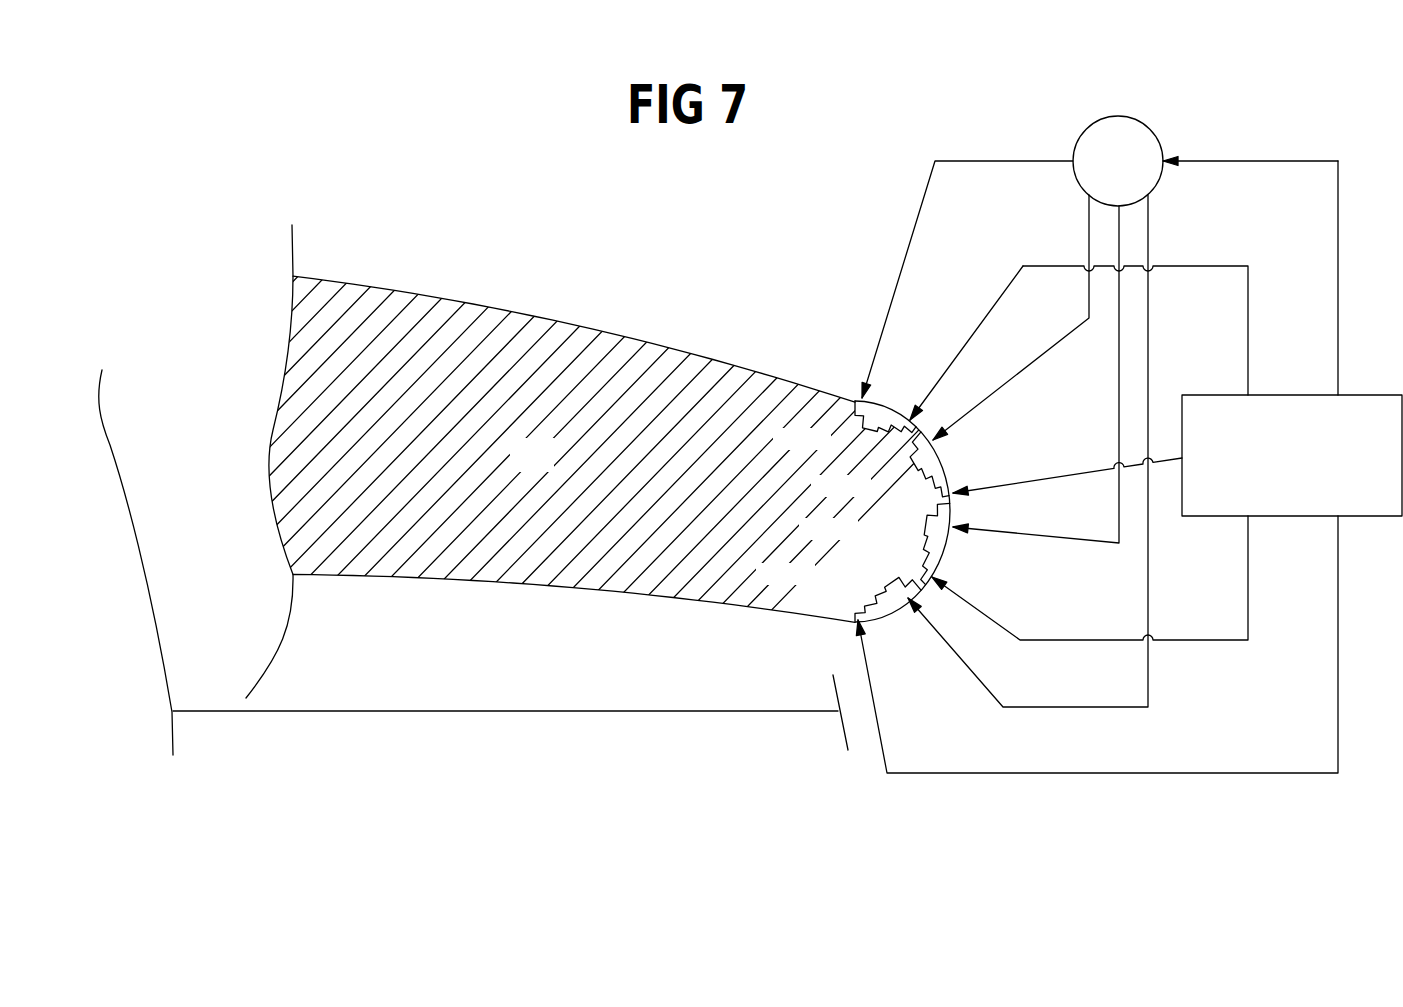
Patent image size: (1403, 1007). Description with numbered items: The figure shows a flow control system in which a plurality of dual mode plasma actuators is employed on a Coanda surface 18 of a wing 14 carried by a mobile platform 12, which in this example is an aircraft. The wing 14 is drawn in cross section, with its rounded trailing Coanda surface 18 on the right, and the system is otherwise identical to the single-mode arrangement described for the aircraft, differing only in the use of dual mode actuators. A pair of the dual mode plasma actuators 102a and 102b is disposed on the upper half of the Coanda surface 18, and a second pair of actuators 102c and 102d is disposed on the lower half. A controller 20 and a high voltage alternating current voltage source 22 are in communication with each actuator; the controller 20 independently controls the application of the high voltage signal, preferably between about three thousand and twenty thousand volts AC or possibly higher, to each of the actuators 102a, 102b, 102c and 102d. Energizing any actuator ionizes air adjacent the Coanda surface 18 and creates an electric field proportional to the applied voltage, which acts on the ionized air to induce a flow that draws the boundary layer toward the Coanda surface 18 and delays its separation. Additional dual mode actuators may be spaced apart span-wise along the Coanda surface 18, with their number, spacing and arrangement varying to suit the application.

The mobile platform 12 is at (588, 712).
The wing 14 is at (547, 467).
The Coanda surface 18 is at (943, 556).
The controller 20 is at (1313, 486).
The high voltage alternating current (AC) voltage source 22 is at (1148, 120).
The dual mode plasma actuator 102a is at (877, 430).
The dual mode plasma actuator 102b is at (925, 476).
The dual mode plasma actuator 102c is at (927, 547).
The dual mode plasma actuator 102d is at (875, 587).